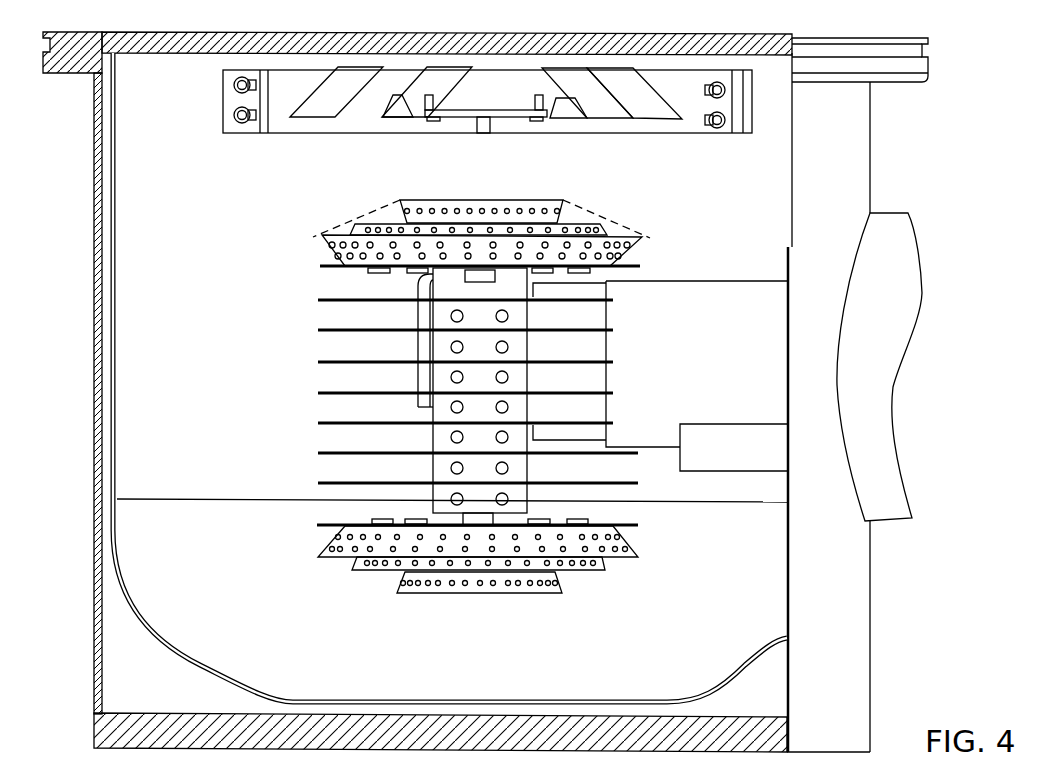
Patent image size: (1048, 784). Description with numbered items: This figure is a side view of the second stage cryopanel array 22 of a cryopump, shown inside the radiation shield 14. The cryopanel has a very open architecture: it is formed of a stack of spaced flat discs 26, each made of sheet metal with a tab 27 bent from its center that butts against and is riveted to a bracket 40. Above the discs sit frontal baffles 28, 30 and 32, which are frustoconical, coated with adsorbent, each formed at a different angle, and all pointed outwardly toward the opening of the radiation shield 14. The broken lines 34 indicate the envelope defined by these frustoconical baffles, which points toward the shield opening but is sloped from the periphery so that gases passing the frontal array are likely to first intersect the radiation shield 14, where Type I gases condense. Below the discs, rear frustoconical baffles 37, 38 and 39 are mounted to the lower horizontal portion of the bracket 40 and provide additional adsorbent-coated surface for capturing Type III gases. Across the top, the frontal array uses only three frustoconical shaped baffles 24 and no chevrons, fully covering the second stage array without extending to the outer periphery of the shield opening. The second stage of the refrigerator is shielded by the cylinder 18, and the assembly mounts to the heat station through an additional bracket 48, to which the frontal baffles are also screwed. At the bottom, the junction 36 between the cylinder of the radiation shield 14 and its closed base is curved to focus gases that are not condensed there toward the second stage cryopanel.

The radiation shield 14 is at (119, 420).
The cylinder 18 is at (714, 360).
The second stage cryopanel array 22 is at (265, 232).
The frustoconical shaped baffles 24 is at (657, 115).
The spaced flat discs 26 is at (318, 363).
The tab 27 is at (518, 345).
The frontal baffle 28 is at (433, 204).
The frontal baffle 30 is at (473, 226).
The frontal baffle 32 is at (527, 234).
The broken lines 34 is at (593, 215).
The junction 36 is at (195, 646).
The rear frustoconical baffle 37 is at (334, 559).
The rear frustoconical baffle 38 is at (376, 571).
The rear frustoconical baffle 39 is at (420, 594).
The bracket 40 is at (476, 396).
The additional bracket 48 is at (415, 348).